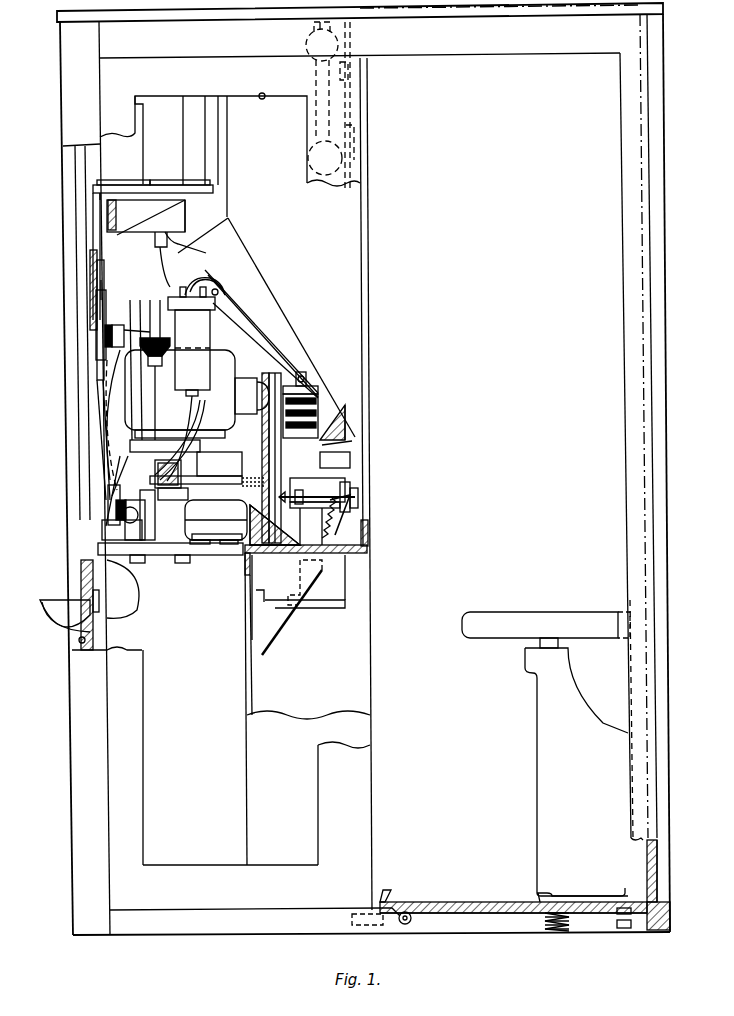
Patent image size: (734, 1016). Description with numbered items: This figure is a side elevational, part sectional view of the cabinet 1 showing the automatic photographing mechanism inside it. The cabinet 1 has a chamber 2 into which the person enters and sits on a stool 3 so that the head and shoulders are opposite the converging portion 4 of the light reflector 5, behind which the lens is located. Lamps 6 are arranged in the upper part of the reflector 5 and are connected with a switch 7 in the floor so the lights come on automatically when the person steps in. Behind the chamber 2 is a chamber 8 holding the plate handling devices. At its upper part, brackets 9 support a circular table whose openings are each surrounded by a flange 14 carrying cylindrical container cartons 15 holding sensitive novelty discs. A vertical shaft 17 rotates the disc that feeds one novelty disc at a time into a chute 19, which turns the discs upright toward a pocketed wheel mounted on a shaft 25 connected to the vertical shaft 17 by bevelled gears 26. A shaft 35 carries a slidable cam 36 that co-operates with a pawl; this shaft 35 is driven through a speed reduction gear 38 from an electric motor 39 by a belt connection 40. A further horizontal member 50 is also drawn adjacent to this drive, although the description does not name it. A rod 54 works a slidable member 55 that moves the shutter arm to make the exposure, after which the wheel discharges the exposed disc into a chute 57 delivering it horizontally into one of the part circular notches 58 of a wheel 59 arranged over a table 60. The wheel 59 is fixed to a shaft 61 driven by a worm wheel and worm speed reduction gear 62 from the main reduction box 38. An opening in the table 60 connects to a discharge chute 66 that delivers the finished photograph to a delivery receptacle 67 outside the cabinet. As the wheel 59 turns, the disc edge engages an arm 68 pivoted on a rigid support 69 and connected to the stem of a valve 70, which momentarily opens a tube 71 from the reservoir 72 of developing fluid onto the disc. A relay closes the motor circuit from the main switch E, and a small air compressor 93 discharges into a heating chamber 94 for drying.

The cabinet 1 is at (664, 392).
The chamber 2 is at (648, 290).
The stool 3 is at (557, 612).
The converging portion 4 is at (268, 302).
The light reflector 5 is at (362, 262).
The lamps 6 is at (334, 145).
The switch 7 is at (626, 928).
The chamber 8 is at (263, 92).
The brackets 9 is at (108, 214).
The flange 14 is at (189, 182).
The container cartons 15 is at (176, 136).
The vertical shaft 17 is at (160, 243).
The chute 19 is at (146, 217).
The shaft 25 is at (110, 323).
The bevelled gears 26 is at (148, 338).
The shaft 35 is at (324, 484).
The cam 36 is at (275, 525).
The speed reduction gear 38 is at (197, 463).
The electric motor 39 is at (234, 359).
The belt connection 40 is at (262, 428).
The shaft 50 is at (355, 498).
The rod 54 is at (216, 520).
The slidable member 55 is at (112, 348).
The chute 57 is at (100, 450).
The part circular notches 58 is at (222, 540).
The wheel 59 is at (204, 542).
The table 60 is at (230, 542).
The shaft 61 is at (178, 538).
The worm wheel and worm speed reduction gear 62 is at (172, 485).
The discharge chute 66 is at (110, 605).
The delivery receptacle 67 is at (62, 620).
The arm 68 is at (102, 522).
The rigid support 69 is at (110, 510).
The valve 70 is at (90, 272).
The tube 71 is at (200, 401).
The reservoir 72 is at (191, 384).
The air compressor 93 is at (305, 395).
The heating chamber 94 is at (206, 290).
The main switch E is at (298, 605).